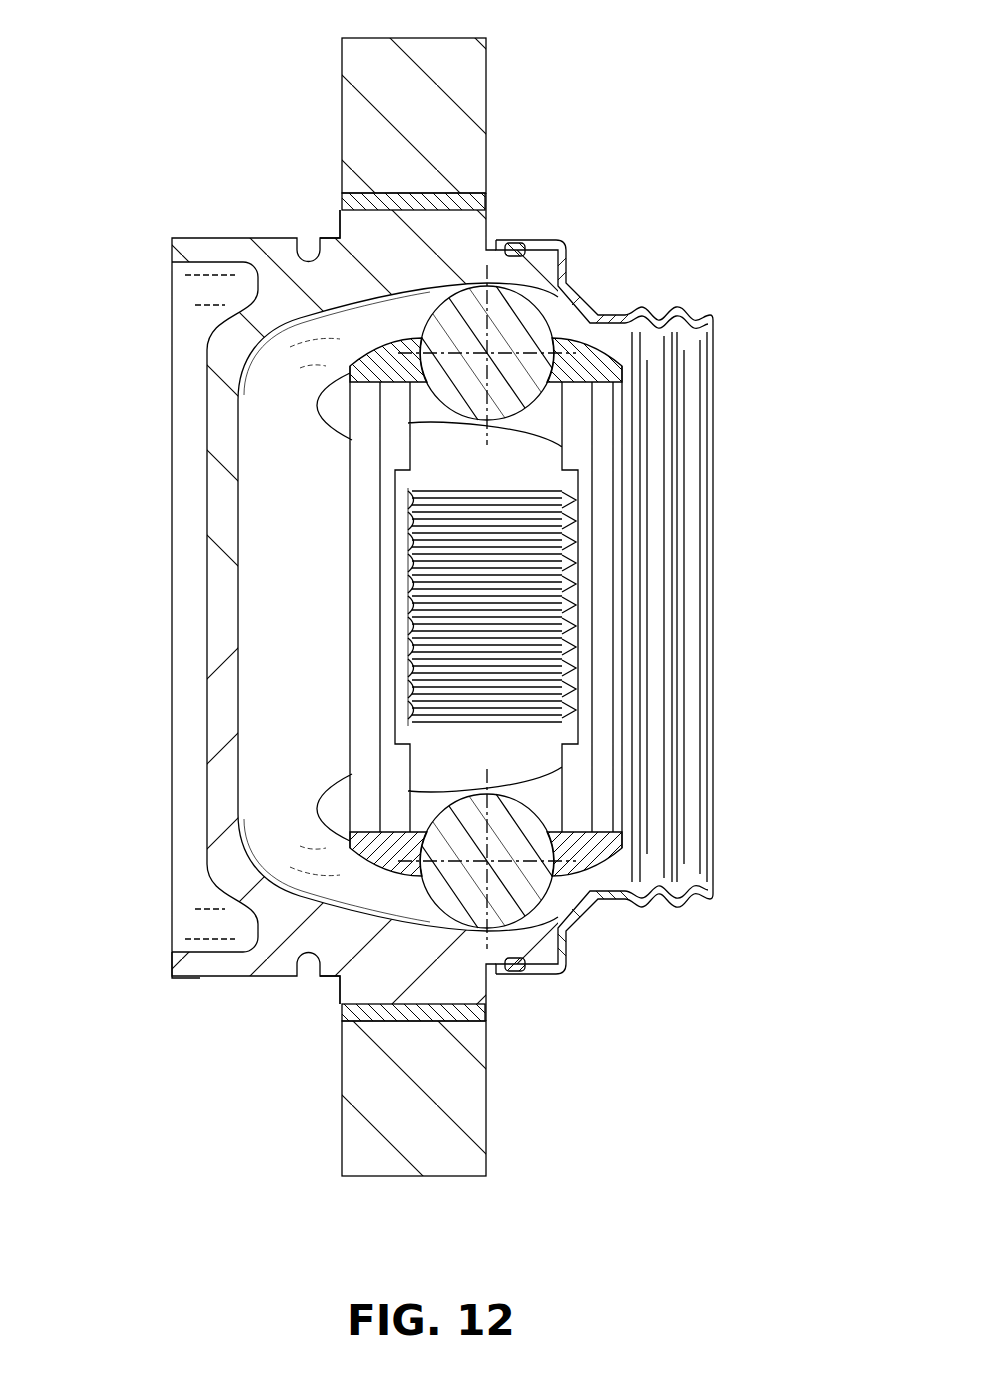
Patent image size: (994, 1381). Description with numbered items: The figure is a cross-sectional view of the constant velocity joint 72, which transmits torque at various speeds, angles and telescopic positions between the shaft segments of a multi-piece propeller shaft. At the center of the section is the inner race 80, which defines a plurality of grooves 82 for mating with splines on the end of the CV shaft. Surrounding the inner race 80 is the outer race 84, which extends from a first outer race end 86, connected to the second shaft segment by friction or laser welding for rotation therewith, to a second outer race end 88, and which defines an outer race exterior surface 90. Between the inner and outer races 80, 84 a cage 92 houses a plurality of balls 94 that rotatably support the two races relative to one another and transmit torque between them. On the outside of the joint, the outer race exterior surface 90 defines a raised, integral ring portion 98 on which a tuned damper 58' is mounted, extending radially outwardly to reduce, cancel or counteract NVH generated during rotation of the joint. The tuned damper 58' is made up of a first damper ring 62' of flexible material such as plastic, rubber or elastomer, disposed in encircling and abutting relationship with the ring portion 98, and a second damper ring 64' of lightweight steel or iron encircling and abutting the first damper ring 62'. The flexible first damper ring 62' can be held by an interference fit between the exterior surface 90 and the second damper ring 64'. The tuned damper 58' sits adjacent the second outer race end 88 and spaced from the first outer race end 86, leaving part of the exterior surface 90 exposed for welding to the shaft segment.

The tuned damper 58' is at (427, 1141).
The second damper ring 64' is at (462, 98).
The first damper ring 62' is at (376, 543).
The constant velocity joint 72 is at (702, 140).
The inner race 80 is at (575, 440).
The grooves 82 is at (502, 612).
The outer race 84 is at (260, 978).
The first outer race end 86 is at (175, 962).
The second outer race end 88 is at (568, 948).
The outer race exterior surface 90 is at (335, 238).
The cage 92 is at (586, 316).
The balls 94 is at (541, 296).
The raised, integral ring portion 98 is at (338, 980).